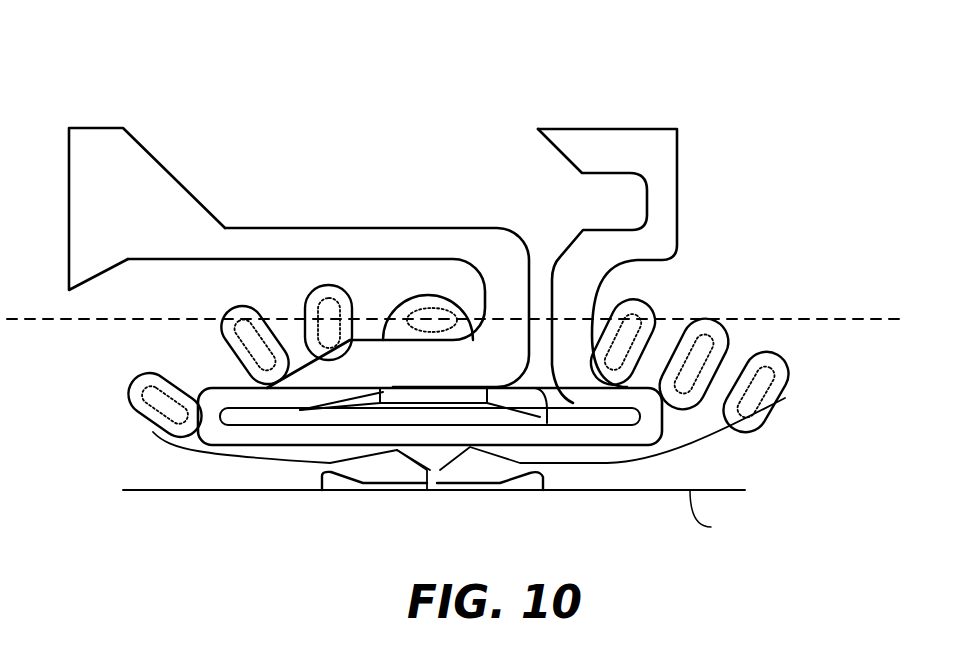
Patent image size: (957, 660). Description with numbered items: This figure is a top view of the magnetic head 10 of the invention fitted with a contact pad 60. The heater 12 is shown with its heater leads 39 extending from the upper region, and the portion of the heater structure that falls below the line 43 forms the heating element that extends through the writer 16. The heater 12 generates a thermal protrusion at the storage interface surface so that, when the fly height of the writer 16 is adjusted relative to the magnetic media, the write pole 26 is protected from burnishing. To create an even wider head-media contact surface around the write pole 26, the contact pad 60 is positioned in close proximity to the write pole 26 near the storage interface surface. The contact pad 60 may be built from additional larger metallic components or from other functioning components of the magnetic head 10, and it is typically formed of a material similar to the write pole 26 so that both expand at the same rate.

The magnetic head 10 is at (728, 120).
The heater 12 is at (677, 206).
The writer 16 is at (236, 127).
The write pole 26 is at (418, 395).
The heater leads 39 is at (127, 168).
The line 43 is at (101, 323).
The contact pad 60 is at (545, 477).